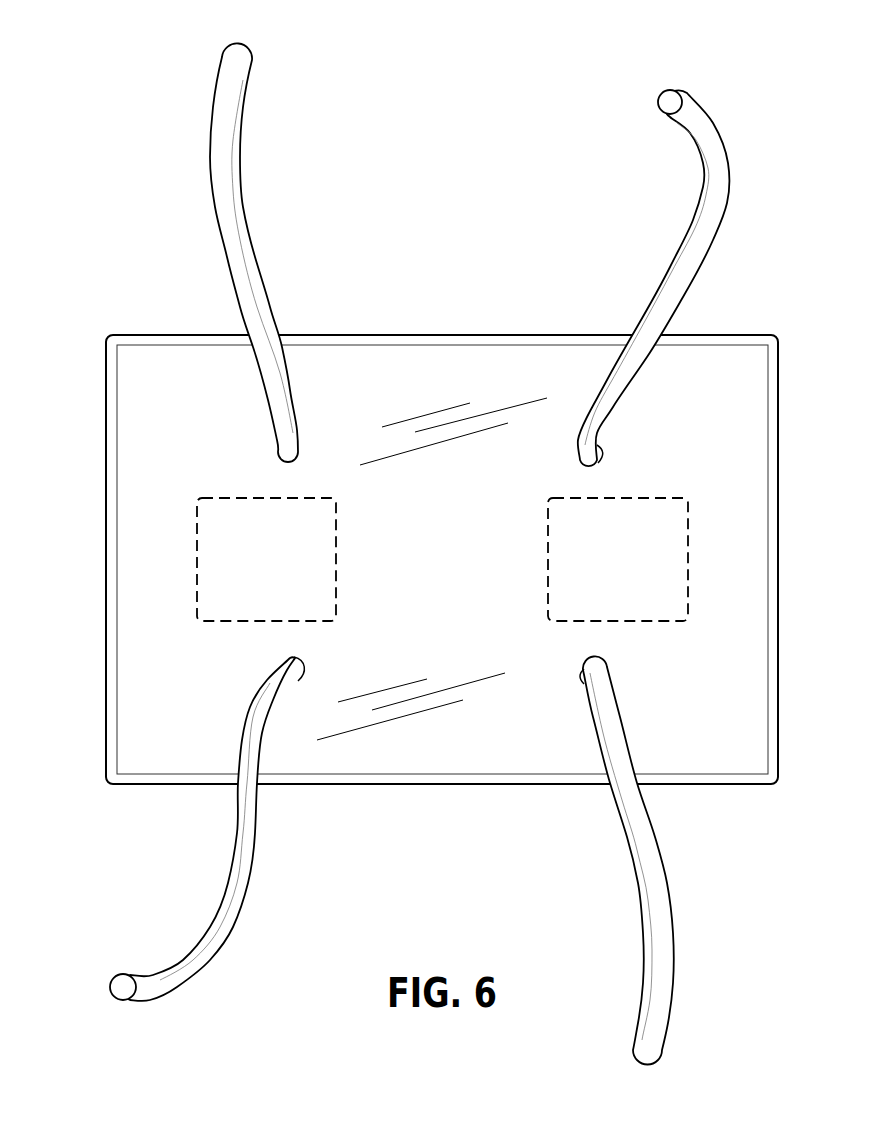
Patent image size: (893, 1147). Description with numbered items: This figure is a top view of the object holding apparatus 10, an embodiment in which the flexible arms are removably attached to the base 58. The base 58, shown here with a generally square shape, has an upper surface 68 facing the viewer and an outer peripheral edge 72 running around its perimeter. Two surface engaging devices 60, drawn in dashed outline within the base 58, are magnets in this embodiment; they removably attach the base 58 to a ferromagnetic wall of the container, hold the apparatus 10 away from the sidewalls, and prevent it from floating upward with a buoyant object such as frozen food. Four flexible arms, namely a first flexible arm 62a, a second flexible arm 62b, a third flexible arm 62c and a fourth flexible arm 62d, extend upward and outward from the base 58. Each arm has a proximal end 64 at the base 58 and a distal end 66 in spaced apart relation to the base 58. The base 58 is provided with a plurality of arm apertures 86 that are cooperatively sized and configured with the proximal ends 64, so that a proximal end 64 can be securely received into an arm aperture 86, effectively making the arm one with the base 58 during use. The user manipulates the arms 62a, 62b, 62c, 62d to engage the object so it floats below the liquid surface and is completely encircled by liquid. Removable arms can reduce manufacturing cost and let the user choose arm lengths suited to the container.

The holding apparatus 10 is at (768, 85).
The base 58 is at (145, 500).
The surface engaging devices 60 is at (635, 578).
The first flexible arm 62a is at (237, 866).
The second flexible arm 62b is at (226, 225).
The third flexible arm 62c is at (712, 197).
The fourth flexible arm 62d is at (655, 877).
The proximal end 64 is at (302, 451).
The distal end 66 is at (210, 52).
The upper surface 68 is at (712, 400).
The outer peripheral edge 72 is at (100, 371).
The arm apertures 86 is at (290, 659).